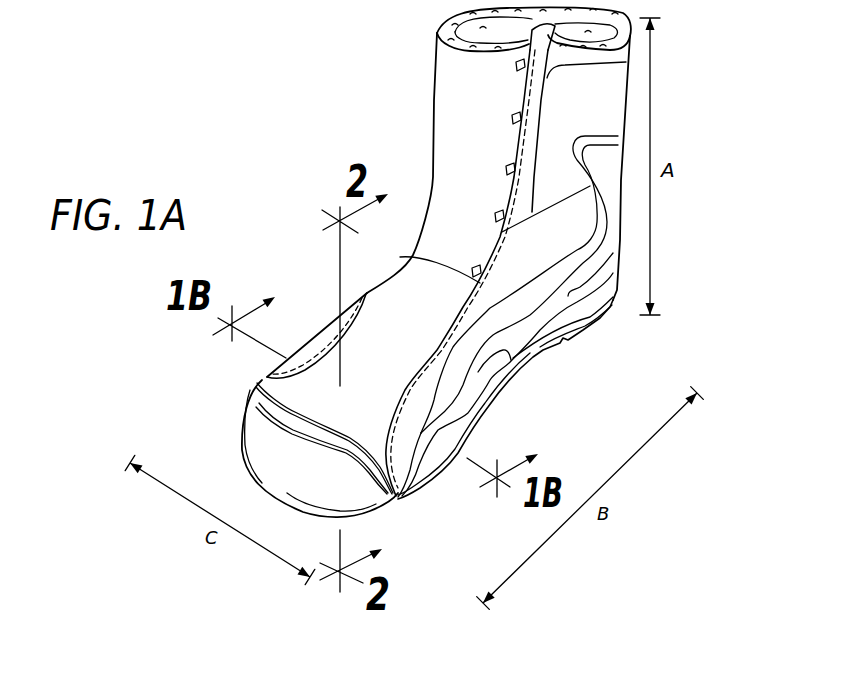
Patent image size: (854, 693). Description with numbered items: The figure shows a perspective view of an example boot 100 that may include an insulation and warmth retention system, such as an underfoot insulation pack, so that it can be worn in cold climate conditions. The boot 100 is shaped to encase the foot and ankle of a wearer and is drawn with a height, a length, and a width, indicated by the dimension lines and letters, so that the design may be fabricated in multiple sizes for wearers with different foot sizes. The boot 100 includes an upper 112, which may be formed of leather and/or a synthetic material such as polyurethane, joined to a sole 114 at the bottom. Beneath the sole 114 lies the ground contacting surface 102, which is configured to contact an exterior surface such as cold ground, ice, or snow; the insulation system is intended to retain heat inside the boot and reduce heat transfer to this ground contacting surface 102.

The boot 100 is at (694, 103).
The ground contacting surface 102 is at (430, 500).
The upper 112 is at (414, 152).
The sole 114 is at (564, 372).